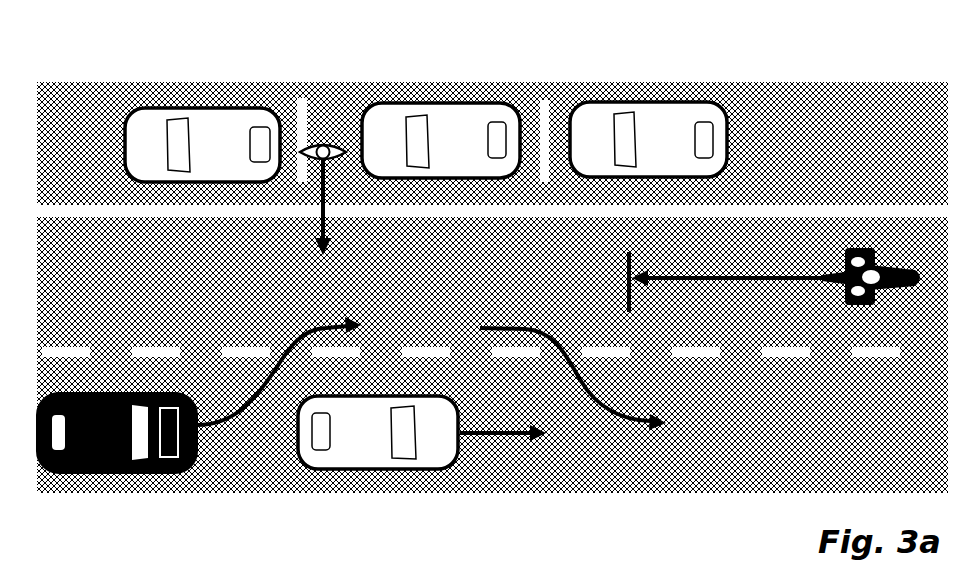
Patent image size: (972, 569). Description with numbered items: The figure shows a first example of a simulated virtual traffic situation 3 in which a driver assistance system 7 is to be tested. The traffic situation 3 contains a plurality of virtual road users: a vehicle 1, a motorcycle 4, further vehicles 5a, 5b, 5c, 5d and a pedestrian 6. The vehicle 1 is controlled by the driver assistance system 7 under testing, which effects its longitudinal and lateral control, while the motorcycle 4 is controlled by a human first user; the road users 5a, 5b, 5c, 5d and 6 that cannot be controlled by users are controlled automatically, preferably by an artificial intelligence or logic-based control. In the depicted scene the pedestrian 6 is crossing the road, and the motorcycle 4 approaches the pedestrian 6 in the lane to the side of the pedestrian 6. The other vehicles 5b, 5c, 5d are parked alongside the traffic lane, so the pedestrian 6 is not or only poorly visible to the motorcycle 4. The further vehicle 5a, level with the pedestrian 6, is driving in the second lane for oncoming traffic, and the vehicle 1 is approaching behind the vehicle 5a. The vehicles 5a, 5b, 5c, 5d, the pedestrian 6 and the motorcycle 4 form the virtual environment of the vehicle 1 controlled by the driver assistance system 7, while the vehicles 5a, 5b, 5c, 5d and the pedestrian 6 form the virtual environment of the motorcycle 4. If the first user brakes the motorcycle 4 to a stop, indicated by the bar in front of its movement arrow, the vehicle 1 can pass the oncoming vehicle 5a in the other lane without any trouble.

The vehicle 1 is at (81, 450).
The virtual traffic situation 3 is at (622, 83).
The motorcycle 4 is at (870, 305).
The further vehicle 5a is at (346, 443).
The other vehicle 5b is at (203, 160).
The other vehicle 5c is at (438, 155).
The other vehicle 5d is at (648, 155).
The pedestrian 6 is at (323, 143).
The driver assistance system 7 is at (163, 449).